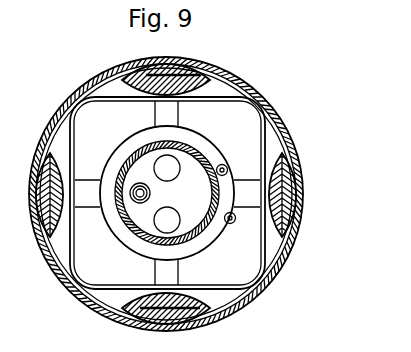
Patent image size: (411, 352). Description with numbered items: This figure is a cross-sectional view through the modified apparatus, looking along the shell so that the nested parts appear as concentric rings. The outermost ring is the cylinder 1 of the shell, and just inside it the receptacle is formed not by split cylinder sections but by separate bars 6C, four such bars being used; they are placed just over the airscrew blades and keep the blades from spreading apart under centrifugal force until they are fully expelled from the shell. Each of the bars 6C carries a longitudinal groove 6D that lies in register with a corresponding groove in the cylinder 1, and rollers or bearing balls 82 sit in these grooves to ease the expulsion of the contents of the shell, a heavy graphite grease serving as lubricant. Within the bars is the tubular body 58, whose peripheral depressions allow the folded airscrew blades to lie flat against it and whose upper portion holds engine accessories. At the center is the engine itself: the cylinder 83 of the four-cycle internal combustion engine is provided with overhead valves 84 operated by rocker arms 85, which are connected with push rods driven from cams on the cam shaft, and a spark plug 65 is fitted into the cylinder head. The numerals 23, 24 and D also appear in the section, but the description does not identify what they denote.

The cylinder 1 is at (215, 71).
The inner shell 23 is at (126, 298).
The tubular body 58 is at (262, 123).
The rollers or bearing balls 82 is at (169, 73).
The bars 6C is at (144, 69).
The longitudinal grooves 6D is at (166, 318).
The side pads 24 is at (277, 153).
The section line D is at (29, 197).
The cylinder of the engine 83 is at (201, 149).
The overhead valves 84 is at (173, 213).
The spark plug 65 is at (138, 198).
The rocker arms 85 is at (224, 167).